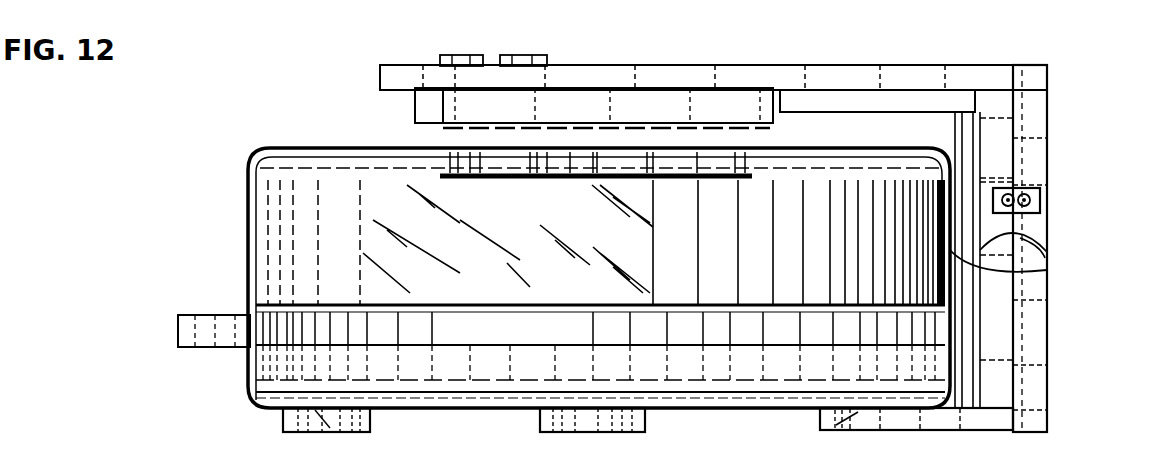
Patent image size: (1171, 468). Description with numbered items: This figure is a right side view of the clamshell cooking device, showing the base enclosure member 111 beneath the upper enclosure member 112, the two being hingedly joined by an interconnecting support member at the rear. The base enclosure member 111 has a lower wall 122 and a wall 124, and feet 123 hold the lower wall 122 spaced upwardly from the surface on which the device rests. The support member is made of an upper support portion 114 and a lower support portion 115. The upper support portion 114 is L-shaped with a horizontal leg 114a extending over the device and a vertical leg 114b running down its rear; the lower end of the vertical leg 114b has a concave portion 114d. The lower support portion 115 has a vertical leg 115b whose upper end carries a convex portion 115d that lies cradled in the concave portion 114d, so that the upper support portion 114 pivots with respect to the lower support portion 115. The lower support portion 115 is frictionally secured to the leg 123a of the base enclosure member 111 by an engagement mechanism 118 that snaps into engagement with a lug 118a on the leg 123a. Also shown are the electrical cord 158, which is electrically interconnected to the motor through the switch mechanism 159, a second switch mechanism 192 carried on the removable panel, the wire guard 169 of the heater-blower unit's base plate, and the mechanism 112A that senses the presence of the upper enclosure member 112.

The base enclosure member 111 is at (248, 367).
The upper enclosure member 112 is at (262, 224).
The sensing mechanism 112A is at (985, 262).
The upper support portion 114 is at (764, 221).
The horizontal leg 114a is at (760, 65).
The vertical leg 114b is at (1047, 110).
The concave portion 114d is at (1035, 222).
The lower support portion 115 is at (1062, 342).
The vertical leg 115b is at (1047, 298).
The convex portion 115d is at (1040, 250).
The engagement mechanism 118 is at (881, 434).
The lug 118a is at (863, 412).
The lower wall 122 is at (510, 402).
The feet 123 is at (283, 421).
The leg 123a is at (820, 421).
The wall 124 is at (524, 337).
The electrical cord 158 is at (1035, 188).
The switch mechanism 159 is at (535, 55).
The wire guard 169 is at (540, 180).
The switch mechanism 192 is at (492, 22).